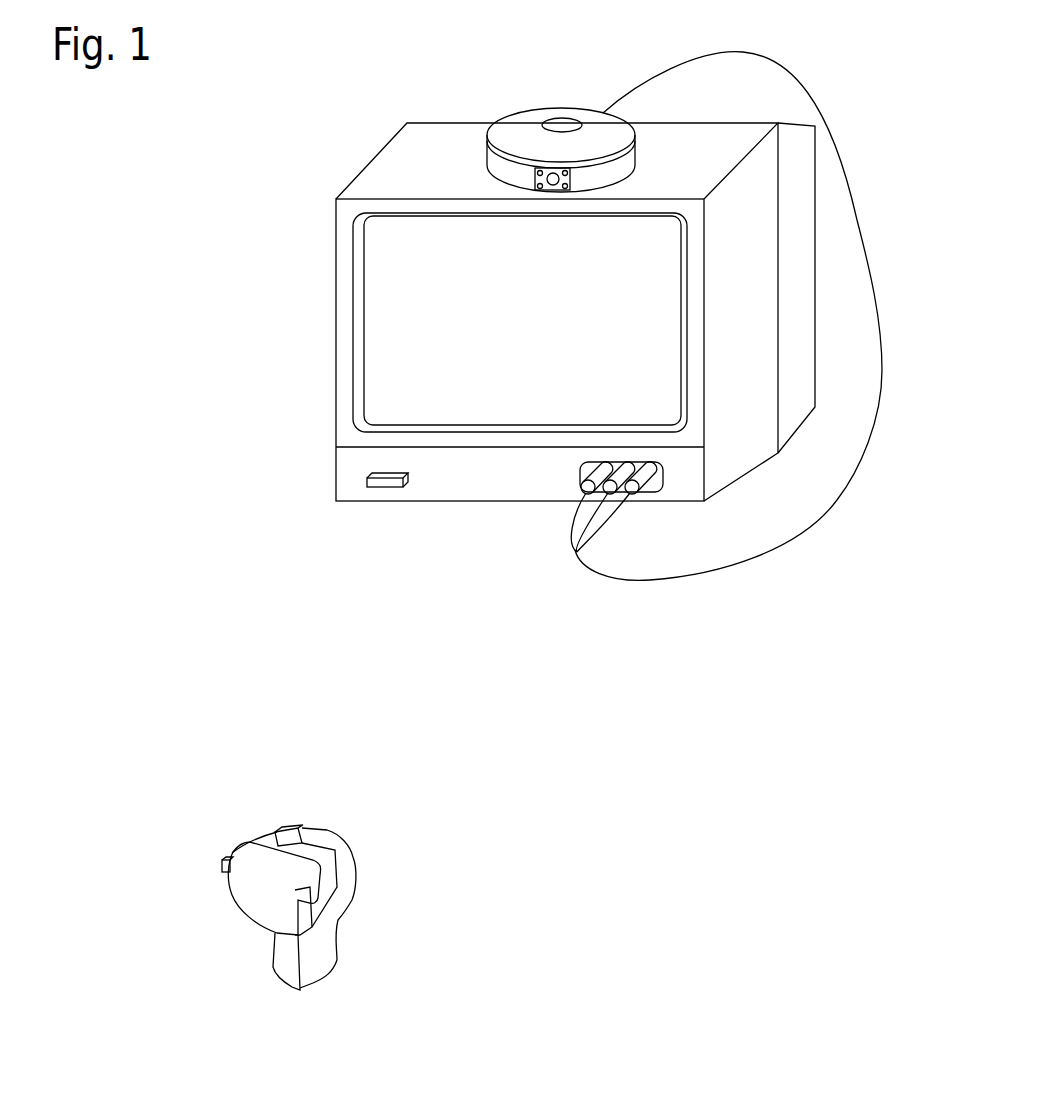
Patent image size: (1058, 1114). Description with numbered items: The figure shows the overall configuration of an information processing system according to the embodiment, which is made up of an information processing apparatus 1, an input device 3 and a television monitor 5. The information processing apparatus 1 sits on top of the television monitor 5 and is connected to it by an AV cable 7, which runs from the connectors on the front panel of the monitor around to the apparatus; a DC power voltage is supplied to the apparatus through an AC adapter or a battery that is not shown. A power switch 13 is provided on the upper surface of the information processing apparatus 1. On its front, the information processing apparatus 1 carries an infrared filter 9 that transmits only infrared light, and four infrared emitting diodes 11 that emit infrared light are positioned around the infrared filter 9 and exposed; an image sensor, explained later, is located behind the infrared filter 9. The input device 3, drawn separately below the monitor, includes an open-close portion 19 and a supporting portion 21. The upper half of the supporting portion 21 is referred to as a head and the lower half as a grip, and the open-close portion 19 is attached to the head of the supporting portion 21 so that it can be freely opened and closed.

The information processing apparatus 1 is at (573, 85).
The input device 3 is at (315, 918).
The television monitor 5 is at (337, 317).
The AV cable 7 is at (607, 580).
The infrared filter 9 is at (553, 186).
The infrared emitting diodes 11 is at (538, 172).
The power switch 13 is at (560, 123).
The open-close portion 19 is at (233, 905).
The supporting portion 21 is at (357, 870).